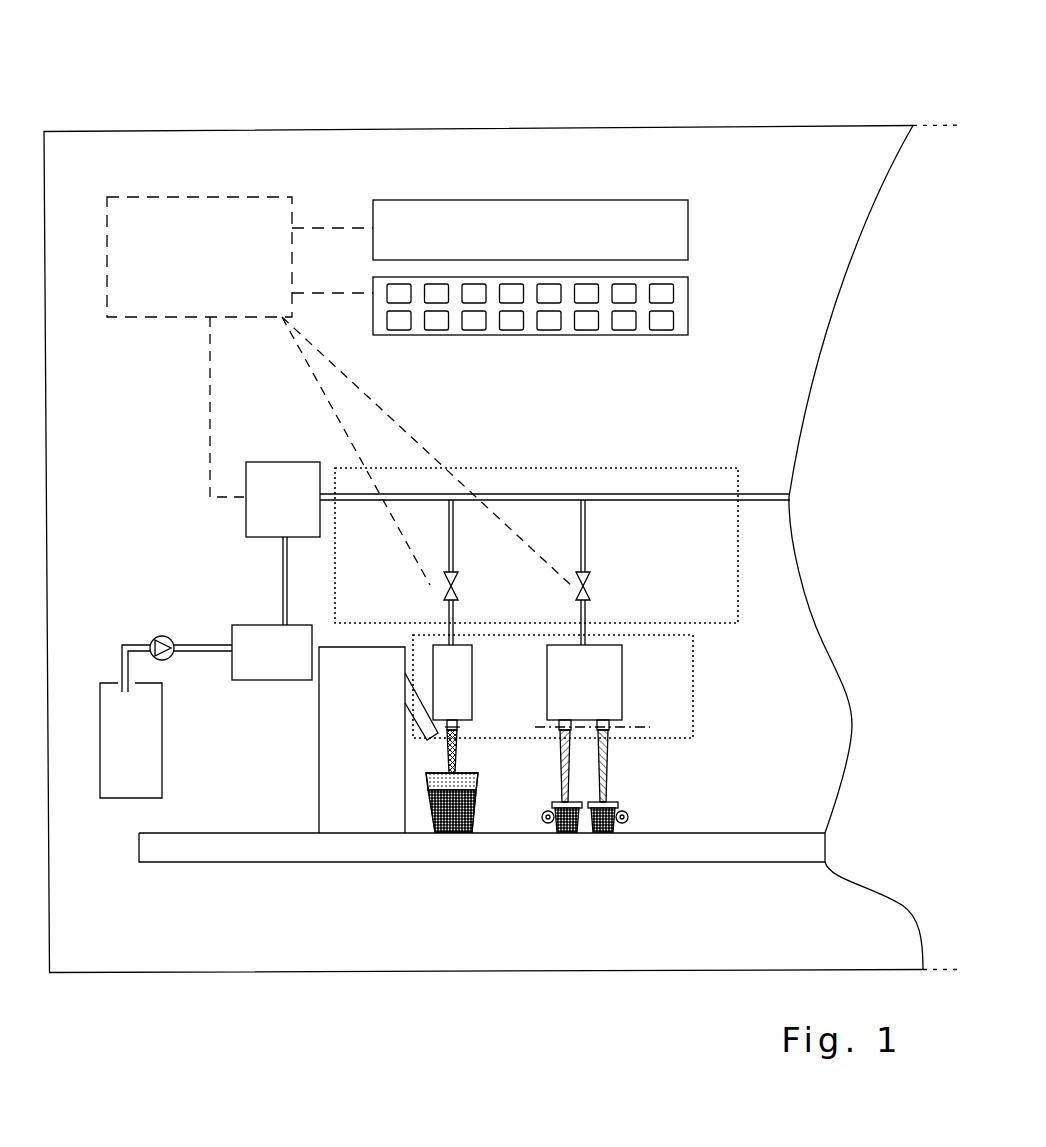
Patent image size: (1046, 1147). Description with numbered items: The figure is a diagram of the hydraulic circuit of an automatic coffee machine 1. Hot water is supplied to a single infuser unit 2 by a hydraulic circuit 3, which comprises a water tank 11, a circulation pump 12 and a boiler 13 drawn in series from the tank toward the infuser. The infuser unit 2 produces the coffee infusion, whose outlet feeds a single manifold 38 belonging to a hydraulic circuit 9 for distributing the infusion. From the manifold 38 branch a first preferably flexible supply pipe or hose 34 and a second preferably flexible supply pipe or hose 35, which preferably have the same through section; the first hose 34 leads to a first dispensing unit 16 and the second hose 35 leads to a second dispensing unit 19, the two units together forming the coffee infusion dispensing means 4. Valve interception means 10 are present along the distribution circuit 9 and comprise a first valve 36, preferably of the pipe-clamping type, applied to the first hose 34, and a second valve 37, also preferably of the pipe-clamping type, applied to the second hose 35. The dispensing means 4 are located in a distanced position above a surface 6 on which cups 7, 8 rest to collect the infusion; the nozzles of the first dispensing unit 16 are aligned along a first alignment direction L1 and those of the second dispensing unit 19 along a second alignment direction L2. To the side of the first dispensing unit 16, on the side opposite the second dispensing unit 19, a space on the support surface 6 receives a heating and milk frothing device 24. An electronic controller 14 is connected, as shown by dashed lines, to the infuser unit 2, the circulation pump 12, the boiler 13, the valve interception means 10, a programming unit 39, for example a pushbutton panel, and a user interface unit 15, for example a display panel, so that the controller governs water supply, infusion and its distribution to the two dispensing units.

The coffee machine 1 is at (506, 124).
The infuser unit 2 is at (278, 462).
The hydraulic circuit 3 is at (196, 664).
The coffee infusion dispensing means 4 is at (703, 665).
The surface 6 is at (290, 830).
The cups 7 is at (548, 810).
The cup 8 is at (480, 778).
The hydraulic circuit 9 is at (515, 487).
The valve interception means 10 is at (504, 590).
The water tank 11 is at (131, 740).
The circulation pump 12 is at (152, 638).
The boiler 13 is at (272, 652).
The electronic controller 14 is at (340, 392).
The user interface unit 15 is at (530, 200).
The first dispensing unit 16 is at (473, 676).
The second dispensing unit 19 is at (622, 690).
The heating and milk frothing device 24 is at (327, 728).
The first supply pipe 34 is at (451, 555).
The second supply pipe 35 is at (590, 557).
The first valve 36 is at (444, 592).
The second valve 37 is at (590, 582).
The manifold 38 is at (404, 494).
The programming unit 39 is at (637, 335).
The first alignment direction L1 is at (460, 727).
The second alignment direction L2 is at (650, 727).